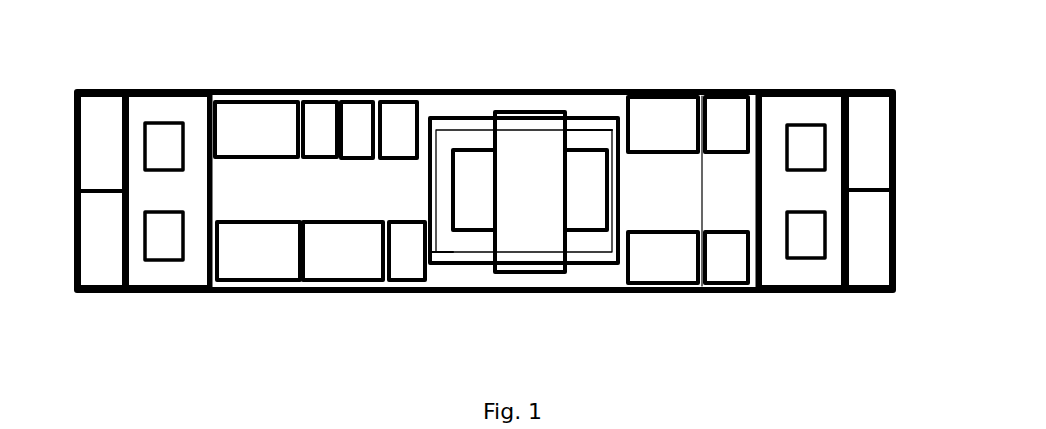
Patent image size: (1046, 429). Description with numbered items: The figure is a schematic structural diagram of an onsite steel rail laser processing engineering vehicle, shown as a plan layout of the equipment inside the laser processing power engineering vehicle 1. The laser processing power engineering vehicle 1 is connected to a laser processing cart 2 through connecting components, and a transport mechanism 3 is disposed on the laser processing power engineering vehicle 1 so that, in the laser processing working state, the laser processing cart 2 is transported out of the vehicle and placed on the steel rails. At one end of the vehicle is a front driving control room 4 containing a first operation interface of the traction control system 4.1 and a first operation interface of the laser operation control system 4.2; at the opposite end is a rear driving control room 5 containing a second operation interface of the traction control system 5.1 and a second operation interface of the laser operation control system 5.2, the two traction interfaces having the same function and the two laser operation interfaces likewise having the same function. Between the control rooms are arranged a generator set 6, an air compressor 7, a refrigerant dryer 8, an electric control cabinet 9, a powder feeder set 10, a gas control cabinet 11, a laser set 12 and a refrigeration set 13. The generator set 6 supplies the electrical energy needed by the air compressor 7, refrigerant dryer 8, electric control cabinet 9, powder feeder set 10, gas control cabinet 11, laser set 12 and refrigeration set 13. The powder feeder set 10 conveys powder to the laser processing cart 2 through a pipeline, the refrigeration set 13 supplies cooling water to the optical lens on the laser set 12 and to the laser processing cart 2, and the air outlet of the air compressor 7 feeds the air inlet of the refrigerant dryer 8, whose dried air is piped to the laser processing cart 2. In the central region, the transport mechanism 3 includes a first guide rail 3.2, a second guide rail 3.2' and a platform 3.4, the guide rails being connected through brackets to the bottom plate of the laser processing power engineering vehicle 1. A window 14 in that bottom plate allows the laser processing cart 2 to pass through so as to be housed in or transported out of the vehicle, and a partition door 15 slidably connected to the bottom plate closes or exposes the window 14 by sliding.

The laser processing power engineering vehicle 1 is at (433, 102).
The laser processing cart 2 is at (473, 158).
The transport mechanism 3 is at (538, 122).
The first guide rail 3.2 is at (524, 244).
The second guide rail 3.2' is at (603, 75).
The platform 3.4 is at (552, 180).
The front driving control room 4 is at (142, 108).
The first operation interface of the traction control system 4.1 is at (97, 268).
The first operation interface of the laser operation control system 4.2 is at (92, 107).
The rear driving control room 5 is at (813, 106).
The second operation interface of the traction control system 5.1 is at (867, 105).
The second operation interface of the laser operation control system 5.2 is at (867, 270).
The generator set 6 is at (236, 268).
The air compressor 7 is at (333, 268).
The refrigerant dryer 8 is at (410, 265).
The electric control cabinet 9 is at (237, 112).
The powder feeder set 10 is at (335, 112).
The gas control cabinet 11 is at (396, 108).
The laser set 12 is at (643, 258).
The refrigeration set 13 is at (722, 257).
The window 14 is at (437, 252).
The partition door 15 is at (580, 245).